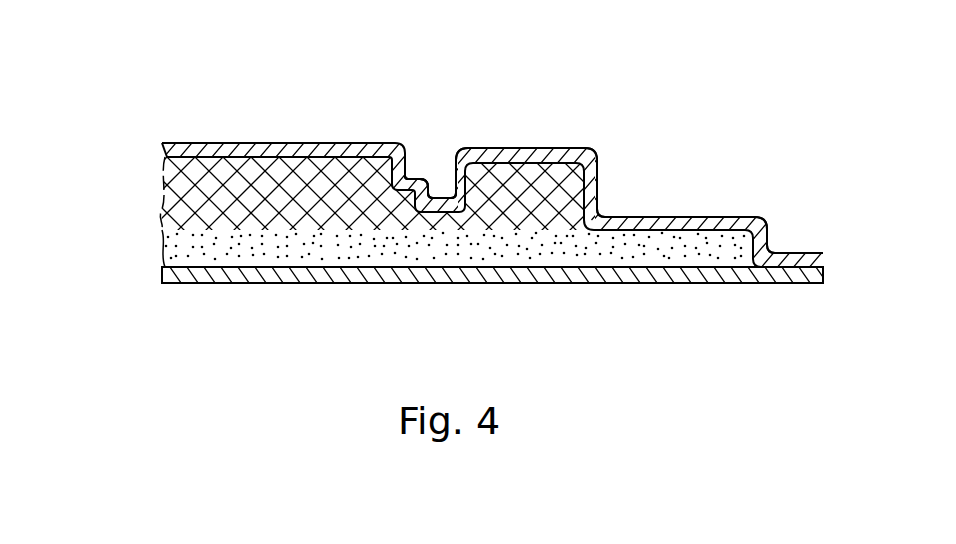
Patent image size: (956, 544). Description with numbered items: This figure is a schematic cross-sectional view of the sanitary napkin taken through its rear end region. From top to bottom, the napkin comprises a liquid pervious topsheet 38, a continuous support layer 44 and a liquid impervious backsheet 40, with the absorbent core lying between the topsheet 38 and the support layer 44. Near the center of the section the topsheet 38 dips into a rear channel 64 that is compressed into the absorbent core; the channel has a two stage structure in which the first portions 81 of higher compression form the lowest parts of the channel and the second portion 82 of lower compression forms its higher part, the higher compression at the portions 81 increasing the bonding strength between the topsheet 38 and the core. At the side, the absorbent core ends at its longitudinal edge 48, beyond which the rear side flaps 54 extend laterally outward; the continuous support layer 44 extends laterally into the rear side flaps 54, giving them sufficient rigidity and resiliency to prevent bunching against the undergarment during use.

The topsheet 38 is at (232, 148).
The second portion of lower compression 82 is at (417, 178).
The first portions of higher compression 81 is at (443, 197).
The rear channel 64 is at (438, 108).
The longitudinal edges 48 is at (587, 202).
The rear side flaps 54 is at (745, 170).
The continuous support layer 44 is at (167, 247).
The backsheet 40 is at (725, 278).